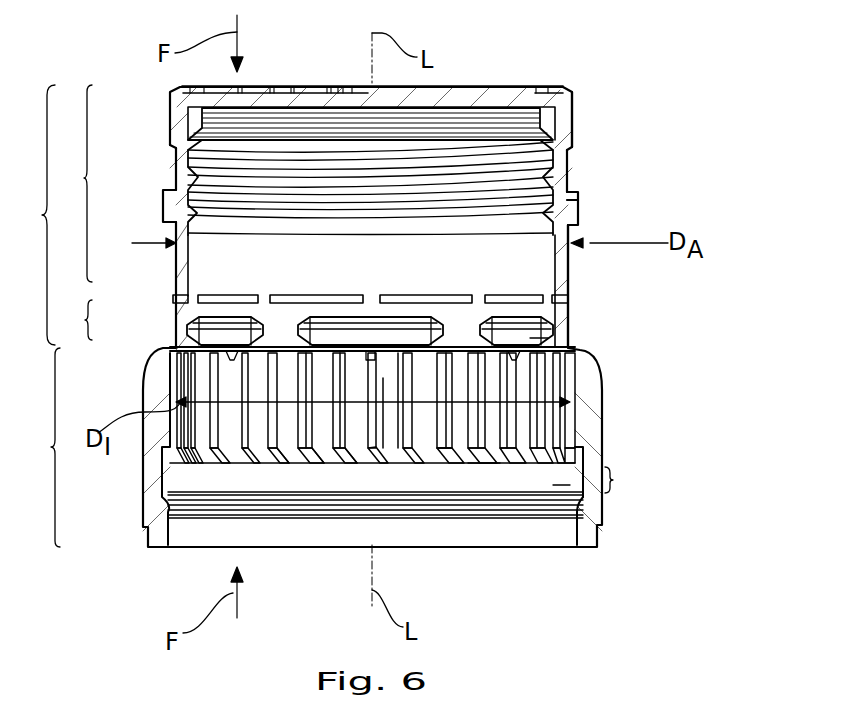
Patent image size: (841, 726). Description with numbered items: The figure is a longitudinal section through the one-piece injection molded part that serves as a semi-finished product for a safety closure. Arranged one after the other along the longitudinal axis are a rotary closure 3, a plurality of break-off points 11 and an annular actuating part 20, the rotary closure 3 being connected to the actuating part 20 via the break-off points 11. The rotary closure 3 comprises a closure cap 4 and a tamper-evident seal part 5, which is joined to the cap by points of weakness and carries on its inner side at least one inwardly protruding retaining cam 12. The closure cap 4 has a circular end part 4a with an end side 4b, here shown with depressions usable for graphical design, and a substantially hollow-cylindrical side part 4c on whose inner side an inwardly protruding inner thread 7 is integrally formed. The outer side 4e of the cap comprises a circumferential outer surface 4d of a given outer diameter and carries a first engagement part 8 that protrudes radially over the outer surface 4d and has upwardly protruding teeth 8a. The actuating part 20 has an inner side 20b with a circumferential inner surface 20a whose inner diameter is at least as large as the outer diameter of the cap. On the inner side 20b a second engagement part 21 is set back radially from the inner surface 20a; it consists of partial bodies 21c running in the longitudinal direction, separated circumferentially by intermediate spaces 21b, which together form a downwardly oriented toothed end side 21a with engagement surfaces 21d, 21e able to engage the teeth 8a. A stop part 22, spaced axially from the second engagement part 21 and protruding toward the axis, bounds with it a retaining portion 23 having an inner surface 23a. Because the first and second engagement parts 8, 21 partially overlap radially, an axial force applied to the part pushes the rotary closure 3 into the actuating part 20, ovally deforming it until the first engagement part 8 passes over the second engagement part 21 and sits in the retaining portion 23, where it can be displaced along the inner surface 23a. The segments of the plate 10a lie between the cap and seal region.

The rotary closure 3 is at (294, 217).
The closure cap 4 is at (319, 216).
The circular end part 4a is at (510, 100).
The end side 4b is at (480, 74).
The side part 4c is at (563, 160).
The outer surface 4d is at (582, 270).
The outer side 4e is at (588, 112).
The tamper-evident seal part 5 is at (643, 327).
The inner thread 7 is at (433, 155).
The first engagement part 8 is at (167, 202).
The teeth 8a is at (577, 193).
The plate segments 10a is at (478, 293).
The break-off points 11 is at (170, 350).
The retaining cam 12 is at (537, 338).
The actuating part 20 is at (307, 447).
The inner surface 20a is at (567, 385).
The inner side 20b is at (184, 430).
The second engagement part 21 is at (583, 448).
The end side 21a is at (502, 478).
The intermediate spaces 21b is at (440, 447).
The partial bodies 21c is at (322, 448).
The engagement surface 21d is at (372, 443).
The engagement surface 21e is at (352, 445).
The stop part 22 is at (535, 510).
The retaining portion 23 is at (611, 506).
The inner surface 23a is at (553, 485).